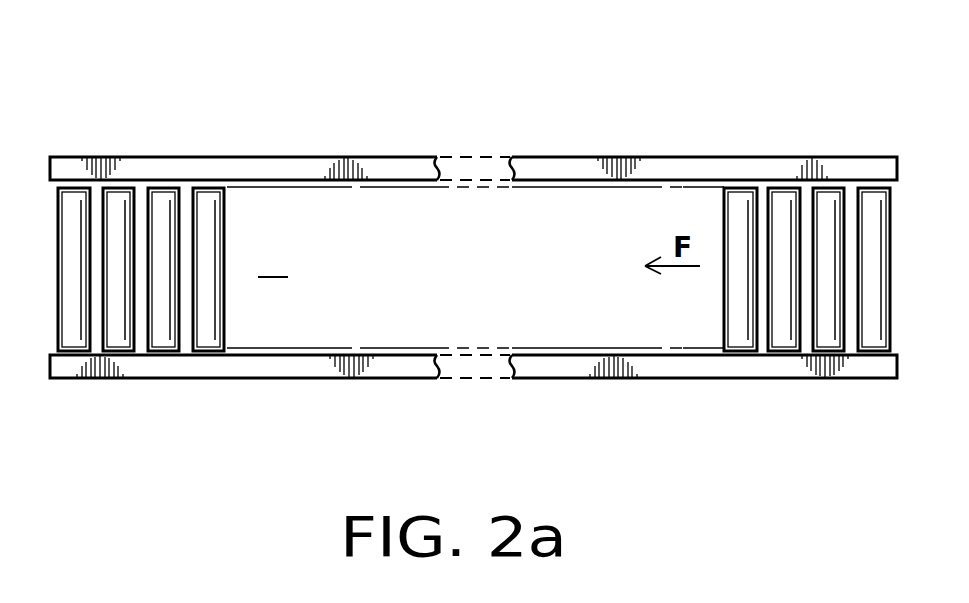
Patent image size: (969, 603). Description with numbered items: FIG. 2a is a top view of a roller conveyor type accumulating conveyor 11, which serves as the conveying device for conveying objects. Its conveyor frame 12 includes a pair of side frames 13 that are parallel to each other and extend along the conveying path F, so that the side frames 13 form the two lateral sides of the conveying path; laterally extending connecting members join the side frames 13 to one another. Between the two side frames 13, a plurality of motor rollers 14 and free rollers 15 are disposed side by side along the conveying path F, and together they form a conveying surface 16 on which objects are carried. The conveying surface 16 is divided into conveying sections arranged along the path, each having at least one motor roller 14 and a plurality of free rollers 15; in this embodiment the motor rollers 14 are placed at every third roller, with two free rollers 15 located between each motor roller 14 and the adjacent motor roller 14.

The accumulating conveyor 11 is at (371, 132).
The conveyor frame 12 is at (524, 157).
The side frames 13 is at (588, 157).
The motor rollers 14 is at (73, 193).
The free rollers 15 is at (163, 193).
The conveying surface 16 is at (273, 259).